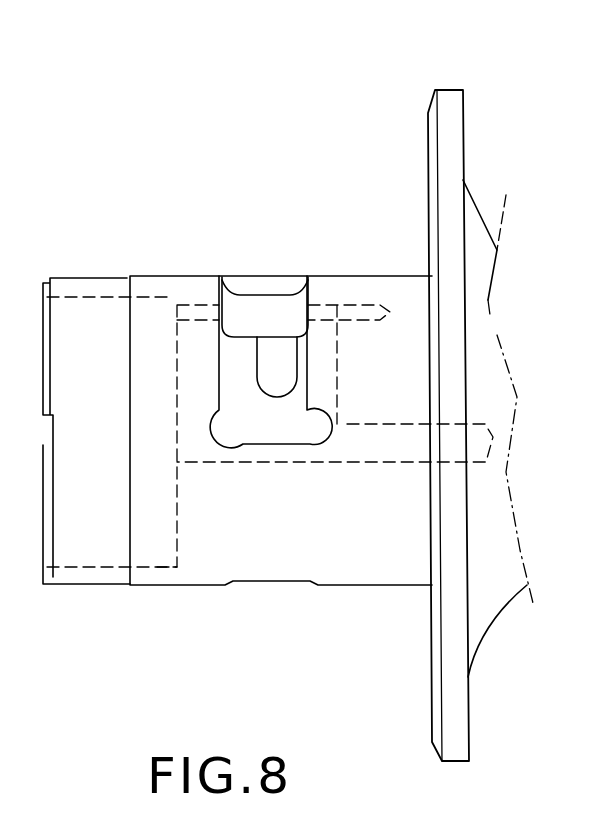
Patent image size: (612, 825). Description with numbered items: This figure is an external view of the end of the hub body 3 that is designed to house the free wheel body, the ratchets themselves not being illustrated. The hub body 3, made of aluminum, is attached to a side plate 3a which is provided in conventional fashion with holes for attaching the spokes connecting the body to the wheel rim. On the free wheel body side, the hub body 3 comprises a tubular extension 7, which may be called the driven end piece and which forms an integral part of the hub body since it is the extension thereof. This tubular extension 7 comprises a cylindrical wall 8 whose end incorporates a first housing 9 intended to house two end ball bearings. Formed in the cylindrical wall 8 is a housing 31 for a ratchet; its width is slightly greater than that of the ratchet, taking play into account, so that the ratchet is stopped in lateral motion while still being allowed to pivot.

The hub body 3 is at (474, 234).
The side plate 3a is at (447, 113).
The tubular extension 7 is at (181, 592).
The cylindrical wall 8 is at (232, 532).
The first housing 9 is at (152, 522).
The housing 31 is at (320, 378).